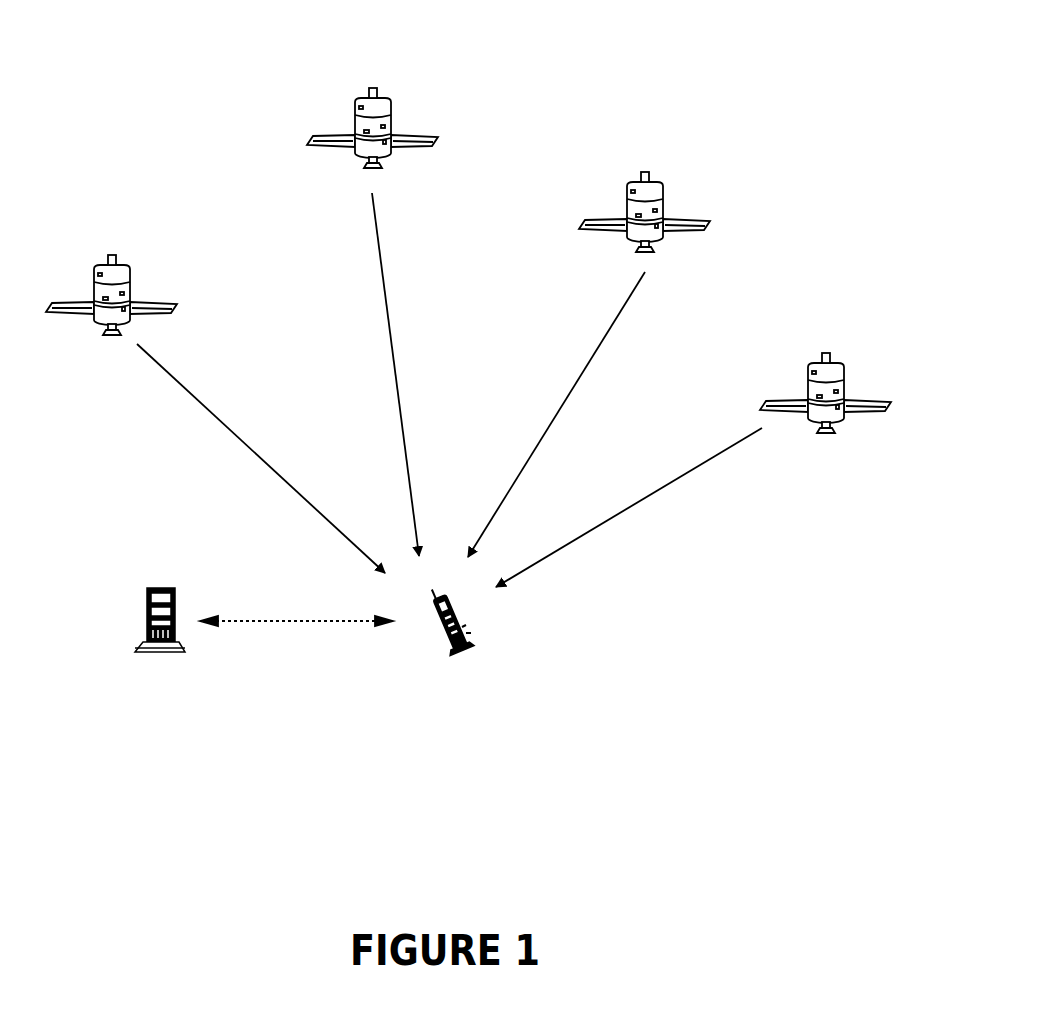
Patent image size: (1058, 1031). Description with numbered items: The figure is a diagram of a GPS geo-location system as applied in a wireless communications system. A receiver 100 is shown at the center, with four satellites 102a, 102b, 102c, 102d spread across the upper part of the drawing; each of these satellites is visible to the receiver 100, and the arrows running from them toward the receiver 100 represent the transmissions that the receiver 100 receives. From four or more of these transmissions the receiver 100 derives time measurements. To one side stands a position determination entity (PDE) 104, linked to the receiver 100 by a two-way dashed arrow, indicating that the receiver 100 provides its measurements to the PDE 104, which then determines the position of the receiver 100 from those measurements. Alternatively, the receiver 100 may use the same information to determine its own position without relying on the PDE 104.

The receiver 100 is at (445, 652).
The satellite 102a is at (112, 255).
The satellite 102b is at (372, 88).
The satellite 102c is at (646, 172).
The satellite 102d is at (826, 353).
The position determination entity (PDE) 104 is at (151, 588).